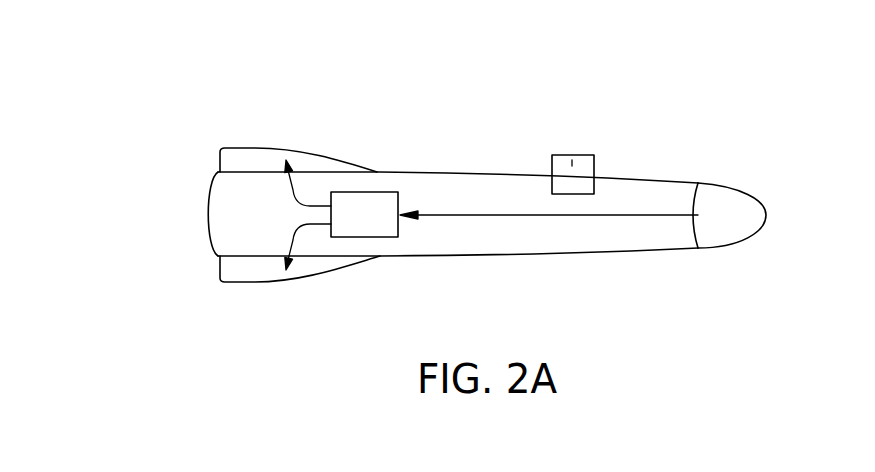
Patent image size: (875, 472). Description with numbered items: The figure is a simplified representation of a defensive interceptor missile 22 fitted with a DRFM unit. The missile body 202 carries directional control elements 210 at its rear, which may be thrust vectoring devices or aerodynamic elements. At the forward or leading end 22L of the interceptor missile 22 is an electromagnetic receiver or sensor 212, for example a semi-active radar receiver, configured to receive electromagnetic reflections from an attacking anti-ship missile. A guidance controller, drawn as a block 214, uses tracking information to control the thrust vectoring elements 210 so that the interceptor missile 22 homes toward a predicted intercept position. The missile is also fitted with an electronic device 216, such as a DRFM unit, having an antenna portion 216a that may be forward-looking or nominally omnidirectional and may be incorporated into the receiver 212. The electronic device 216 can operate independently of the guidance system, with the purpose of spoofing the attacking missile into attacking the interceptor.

The defensive interceptor missile 22 is at (471, 187).
The forward or leading end 22L is at (766, 255).
The elongated body 202 is at (572, 257).
The directional control elements 210 is at (247, 157).
The electromagnetic receiver or sensor 212 is at (785, 197).
The guidance controller 214 is at (378, 224).
The electronic device 216 is at (552, 186).
The antenna portion 216a is at (572, 162).